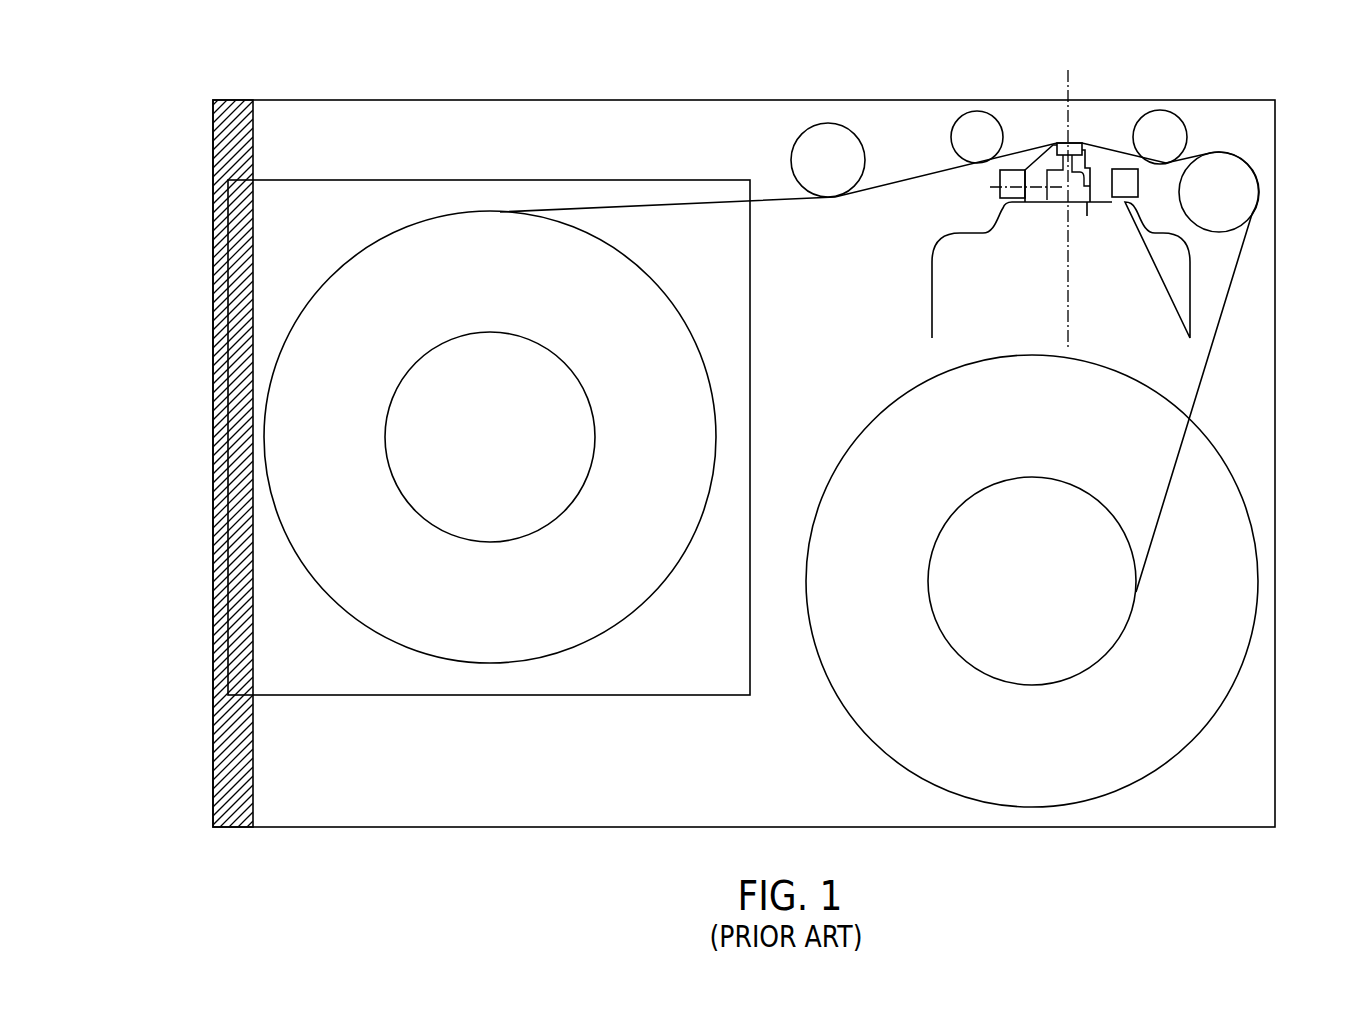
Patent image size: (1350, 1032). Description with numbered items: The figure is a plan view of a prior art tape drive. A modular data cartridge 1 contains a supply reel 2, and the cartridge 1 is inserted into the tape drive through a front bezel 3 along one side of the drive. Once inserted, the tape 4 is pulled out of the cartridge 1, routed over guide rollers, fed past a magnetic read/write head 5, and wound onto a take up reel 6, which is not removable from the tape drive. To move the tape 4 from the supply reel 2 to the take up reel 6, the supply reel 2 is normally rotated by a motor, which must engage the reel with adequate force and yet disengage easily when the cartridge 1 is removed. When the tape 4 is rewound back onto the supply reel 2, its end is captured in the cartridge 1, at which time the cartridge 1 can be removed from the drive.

The modular data cartridge 1 is at (602, 184).
The supply reel 2 is at (473, 656).
The front bezel 3 is at (214, 129).
The tape 4 is at (1215, 355).
The magnetic read/write head 5 is at (1076, 130).
The take up reel 6 is at (1232, 517).